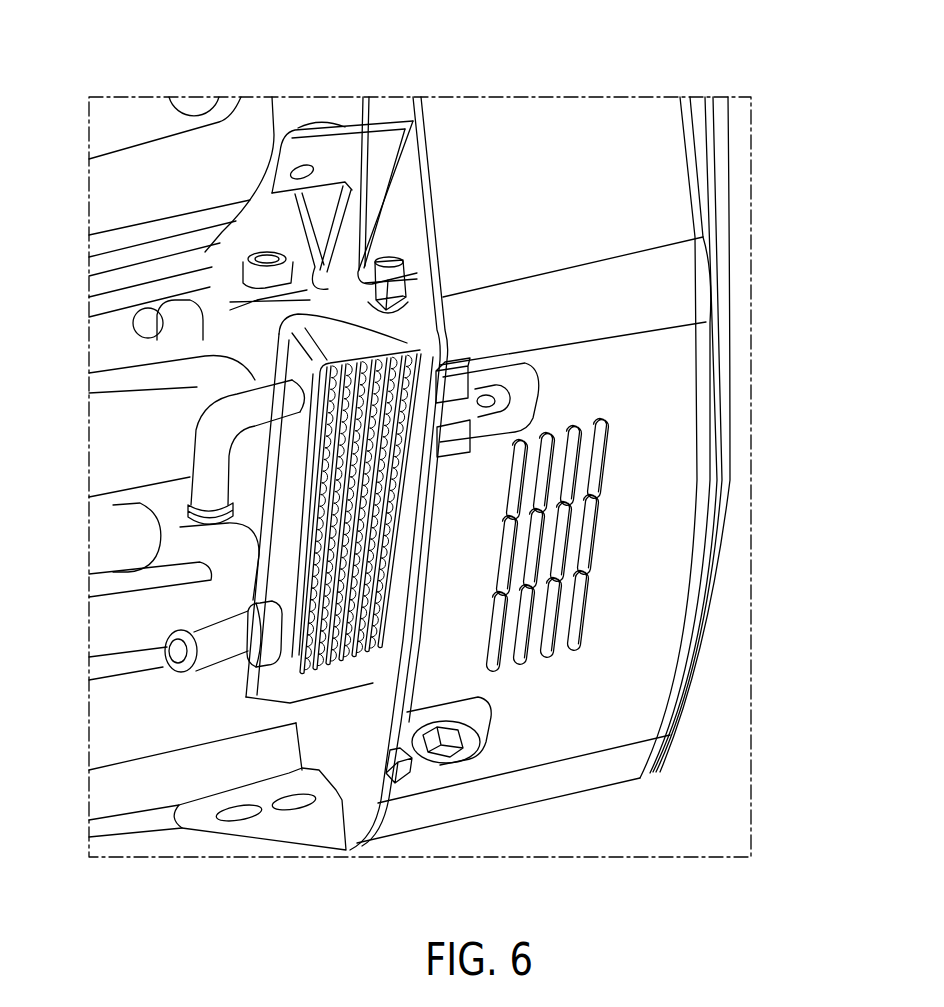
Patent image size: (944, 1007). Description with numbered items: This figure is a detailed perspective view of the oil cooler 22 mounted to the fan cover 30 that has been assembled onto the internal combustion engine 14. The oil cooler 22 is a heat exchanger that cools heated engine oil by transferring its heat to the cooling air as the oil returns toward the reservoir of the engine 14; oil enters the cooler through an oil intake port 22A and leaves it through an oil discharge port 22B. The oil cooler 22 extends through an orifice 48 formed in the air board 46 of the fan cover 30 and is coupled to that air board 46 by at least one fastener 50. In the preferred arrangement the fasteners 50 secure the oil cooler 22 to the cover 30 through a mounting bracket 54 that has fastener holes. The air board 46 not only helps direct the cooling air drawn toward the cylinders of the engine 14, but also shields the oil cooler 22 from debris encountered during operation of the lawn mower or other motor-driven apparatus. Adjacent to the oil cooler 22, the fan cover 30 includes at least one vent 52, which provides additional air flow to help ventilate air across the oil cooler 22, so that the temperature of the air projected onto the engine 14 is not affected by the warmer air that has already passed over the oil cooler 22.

The internal combustion engine 14 is at (118, 58).
The fan cover 30 is at (785, 345).
The oil cooler 22 is at (296, 723).
The oil intake port 22A is at (212, 468).
The oil discharge port 22B is at (218, 655).
The air board 46 is at (408, 182).
The orifice 48 is at (374, 685).
The fastener 50 is at (383, 262).
The vent 52 is at (575, 625).
The mounting bracket 54 is at (348, 345).